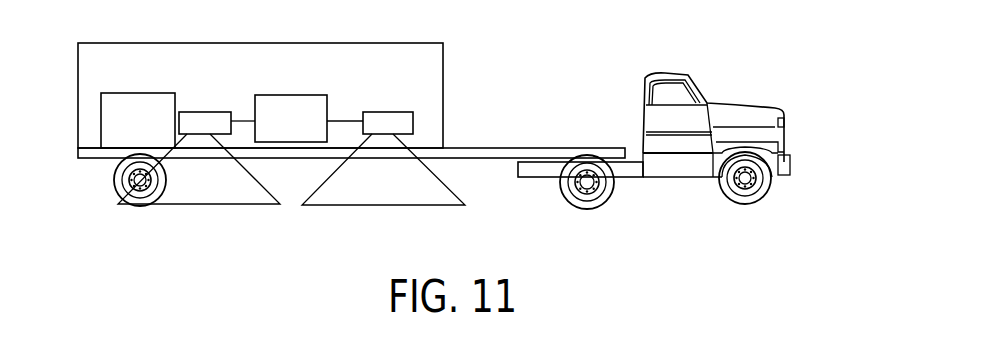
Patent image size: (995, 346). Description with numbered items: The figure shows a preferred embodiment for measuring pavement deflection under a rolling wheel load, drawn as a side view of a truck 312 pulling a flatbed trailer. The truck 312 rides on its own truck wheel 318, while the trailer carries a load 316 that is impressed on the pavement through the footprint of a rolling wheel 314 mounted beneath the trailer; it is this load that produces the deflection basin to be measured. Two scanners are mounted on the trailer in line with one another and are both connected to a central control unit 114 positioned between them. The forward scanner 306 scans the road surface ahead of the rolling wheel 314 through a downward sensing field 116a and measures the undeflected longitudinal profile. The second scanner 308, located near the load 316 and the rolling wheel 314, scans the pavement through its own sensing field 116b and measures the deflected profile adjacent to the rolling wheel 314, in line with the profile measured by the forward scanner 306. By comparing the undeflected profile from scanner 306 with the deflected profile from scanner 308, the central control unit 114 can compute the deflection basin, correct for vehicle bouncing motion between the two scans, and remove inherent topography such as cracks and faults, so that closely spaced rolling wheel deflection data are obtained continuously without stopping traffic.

The truck 312 is at (662, 116).
The rolling wheel 314 is at (114, 172).
The load 316 is at (147, 92).
The scanner 308 is at (197, 112).
The central control unit 114 is at (280, 93).
The forward scanner 306 is at (390, 112).
The truck wheel 318 is at (612, 186).
The sensing field 116a is at (387, 202).
The sensing field 116b is at (208, 204).